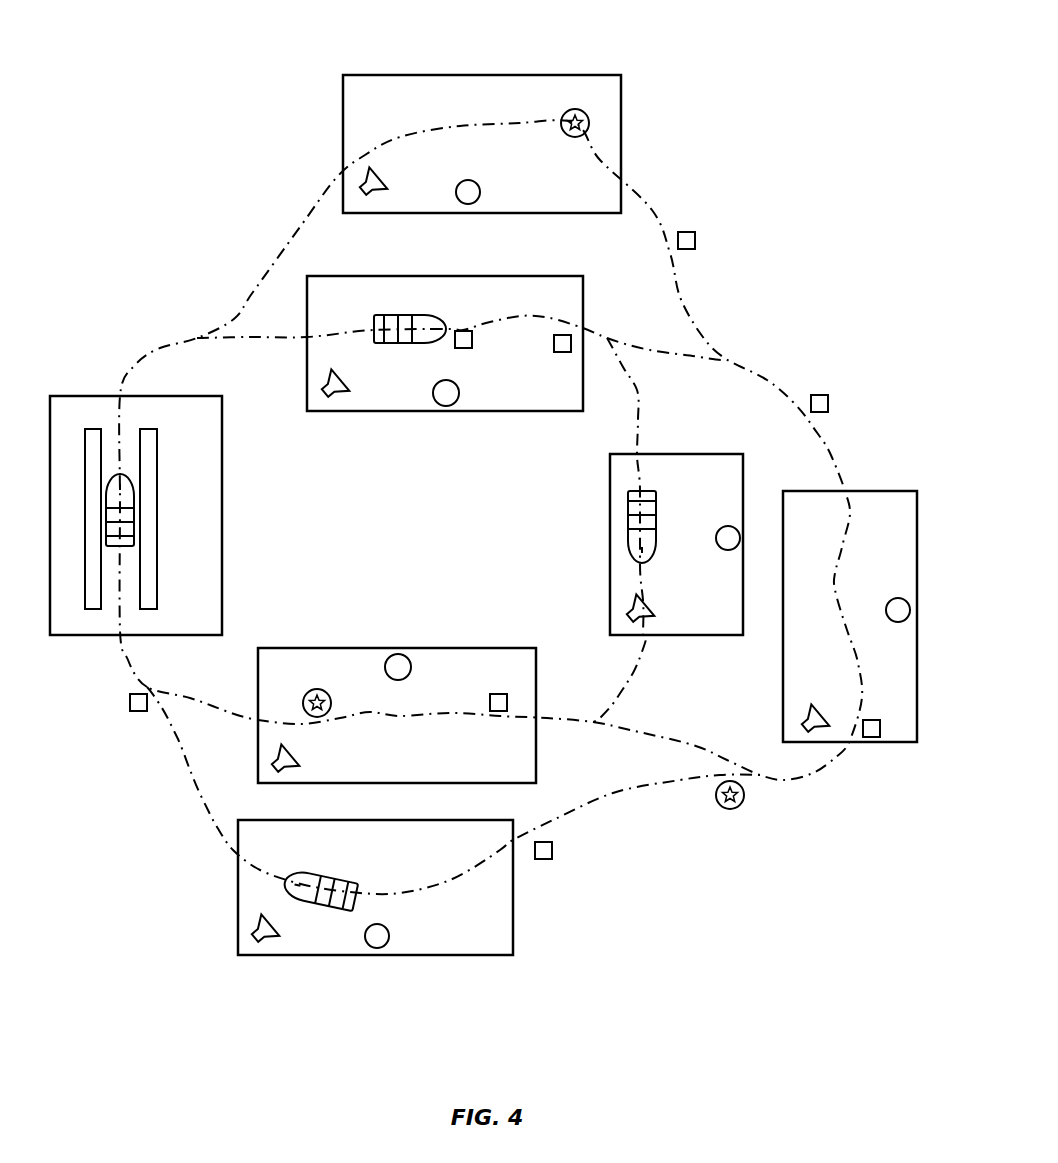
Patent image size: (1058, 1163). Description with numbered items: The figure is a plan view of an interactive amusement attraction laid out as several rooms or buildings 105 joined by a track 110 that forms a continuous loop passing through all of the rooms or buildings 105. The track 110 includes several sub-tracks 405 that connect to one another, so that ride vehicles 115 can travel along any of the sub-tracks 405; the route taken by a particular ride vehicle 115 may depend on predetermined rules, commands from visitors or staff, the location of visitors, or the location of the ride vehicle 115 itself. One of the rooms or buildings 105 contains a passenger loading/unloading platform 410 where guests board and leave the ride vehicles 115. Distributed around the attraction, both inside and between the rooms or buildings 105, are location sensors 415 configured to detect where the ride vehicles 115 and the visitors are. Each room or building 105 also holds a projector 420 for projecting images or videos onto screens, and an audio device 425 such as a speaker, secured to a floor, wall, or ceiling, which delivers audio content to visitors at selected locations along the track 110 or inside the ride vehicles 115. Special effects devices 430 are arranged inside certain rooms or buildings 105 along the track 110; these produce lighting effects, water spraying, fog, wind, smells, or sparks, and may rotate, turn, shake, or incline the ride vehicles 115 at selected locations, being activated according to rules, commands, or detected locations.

The rooms or buildings 105 is at (603, 72).
The track 110 is at (154, 350).
The ride vehicle 115 is at (410, 312).
The sub-tracks 405 is at (248, 289).
The passenger loading/unloading platform 410 is at (82, 448).
The location sensors 415 is at (704, 240).
The projectors 420 is at (458, 404).
The audio devices 425 is at (354, 182).
The special effects devices 430 is at (592, 128).